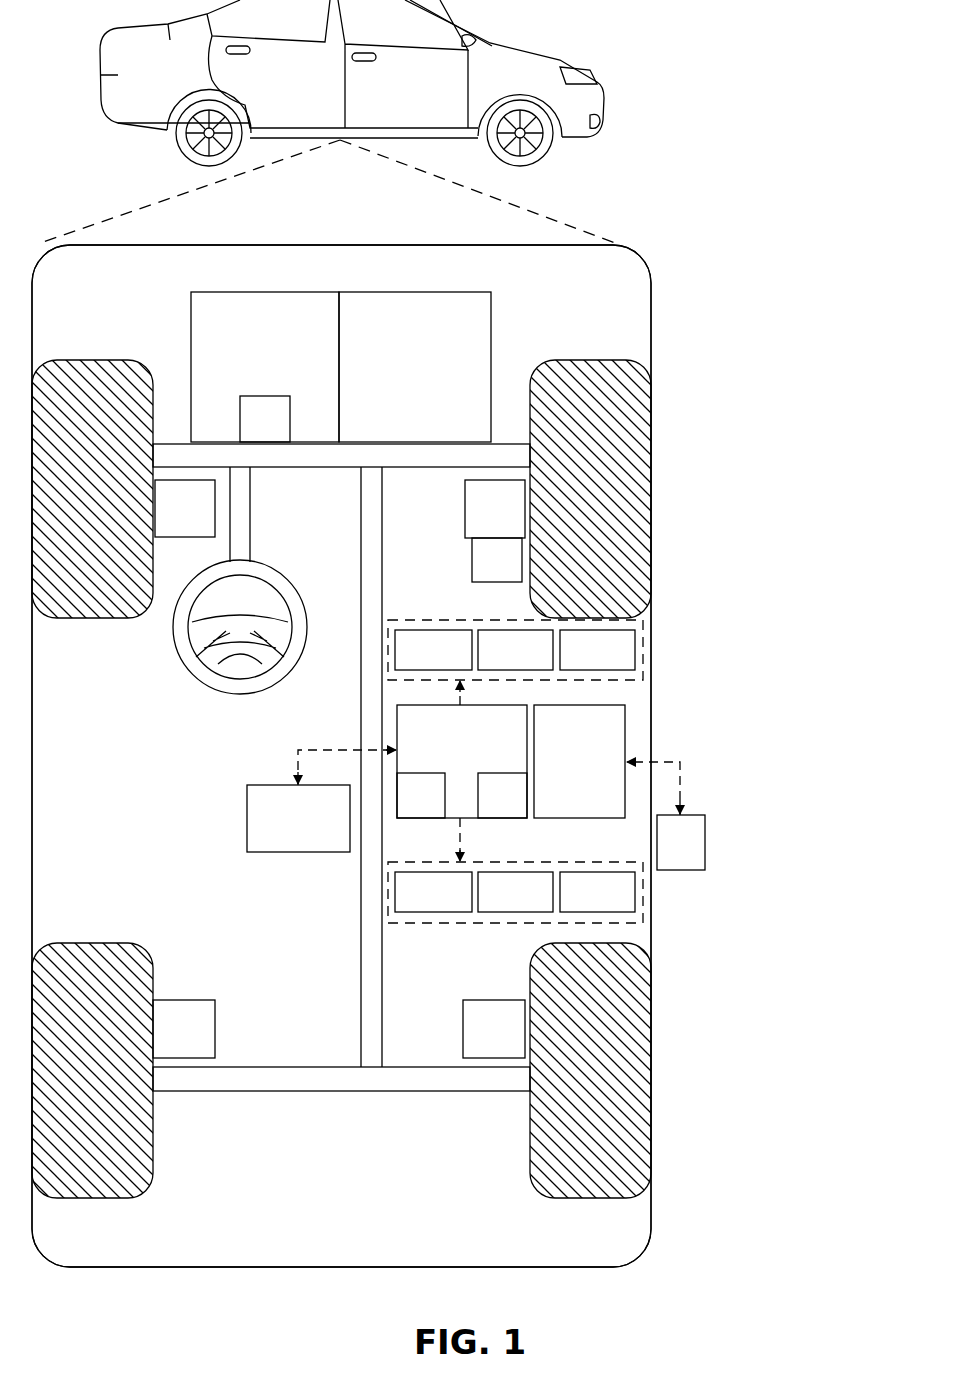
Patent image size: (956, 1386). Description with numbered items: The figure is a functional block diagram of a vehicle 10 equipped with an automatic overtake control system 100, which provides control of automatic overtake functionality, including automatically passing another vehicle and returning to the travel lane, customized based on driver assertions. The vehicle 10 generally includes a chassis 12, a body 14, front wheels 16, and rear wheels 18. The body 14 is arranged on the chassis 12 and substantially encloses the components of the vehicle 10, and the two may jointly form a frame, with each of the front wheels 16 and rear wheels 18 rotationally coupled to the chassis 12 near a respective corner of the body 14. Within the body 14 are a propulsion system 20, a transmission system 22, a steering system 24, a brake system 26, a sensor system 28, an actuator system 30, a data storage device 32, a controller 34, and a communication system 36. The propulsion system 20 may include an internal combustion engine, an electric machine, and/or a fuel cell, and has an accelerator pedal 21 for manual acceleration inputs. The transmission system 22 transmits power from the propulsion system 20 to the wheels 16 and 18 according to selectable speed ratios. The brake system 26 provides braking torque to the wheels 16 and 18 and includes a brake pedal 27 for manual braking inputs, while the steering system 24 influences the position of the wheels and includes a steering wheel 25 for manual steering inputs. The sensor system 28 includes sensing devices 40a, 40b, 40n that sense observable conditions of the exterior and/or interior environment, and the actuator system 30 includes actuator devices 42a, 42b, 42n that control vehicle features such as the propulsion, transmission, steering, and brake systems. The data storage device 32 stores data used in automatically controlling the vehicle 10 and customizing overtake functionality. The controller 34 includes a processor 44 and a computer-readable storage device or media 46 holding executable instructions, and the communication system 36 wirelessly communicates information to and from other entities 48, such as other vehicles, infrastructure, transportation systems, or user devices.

The vehicle 10 is at (113, 60).
The automatic overtake control system 100 is at (632, 222).
The chassis 12 is at (392, 1092).
The body 14 is at (651, 350).
The front wheels 16 is at (95, 360).
The rear wheels 18 is at (90, 1198).
The propulsion system 20 is at (250, 379).
The accelerator pedal 21 is at (250, 434).
The transmission system 22 is at (400, 379).
The steering system 24 is at (262, 535).
The steering wheel 25 is at (200, 677).
The brake system 26 is at (170, 523).
The brake pedal 27 is at (482, 575).
The sensor system 28 is at (470, 620).
The actuator system 30 is at (475, 923).
The data storage device 32 is at (283, 831).
The controller 34 is at (445, 753).
The communication system 36 is at (565, 775).
The sensing device 40a is at (411, 664).
The sensing device 40b is at (493, 664).
The sensing device 40n is at (575, 664).
The actuator device 42a is at (411, 906).
The actuator device 42b is at (493, 906).
The actuator device 42n is at (575, 906).
The processor 44 is at (406, 809).
The computer-readable storage device or media 46 is at (487, 809).
The other entities 48 is at (666, 856).